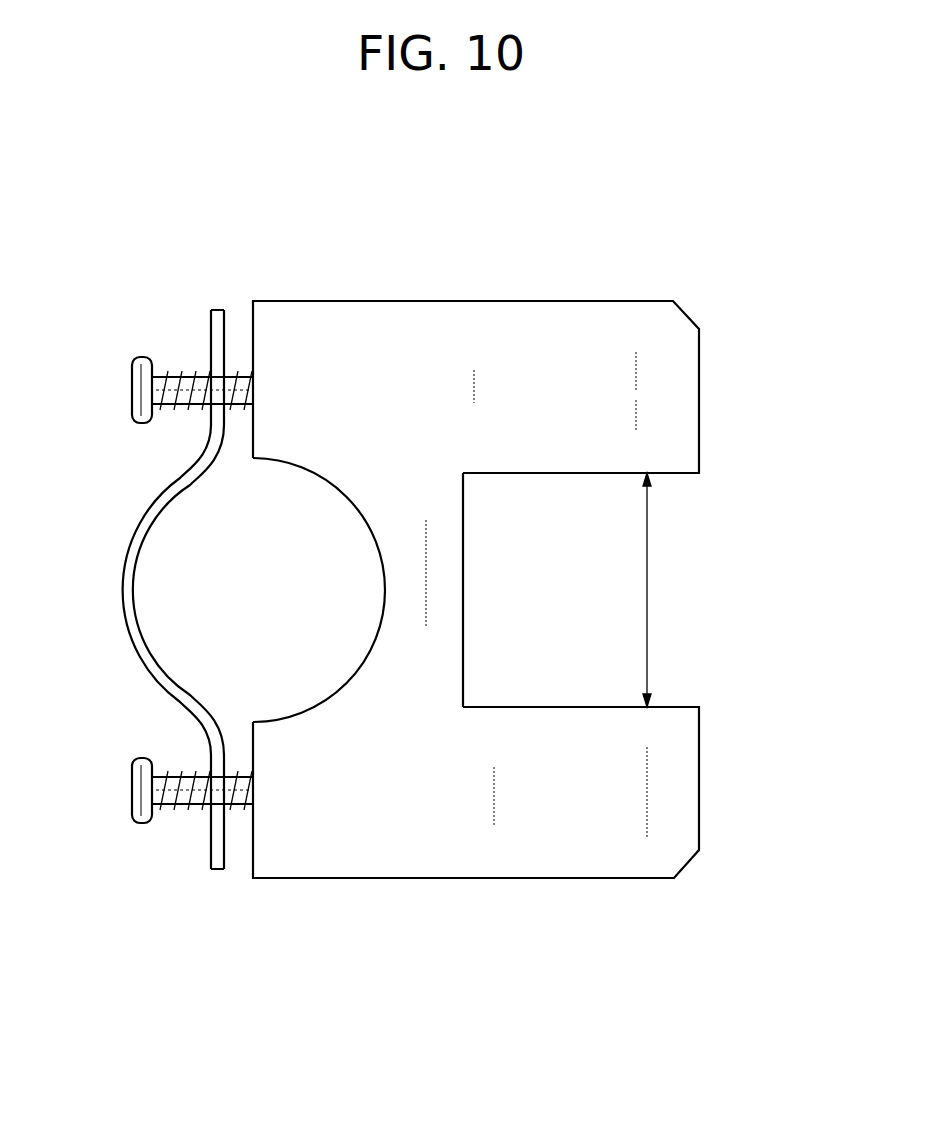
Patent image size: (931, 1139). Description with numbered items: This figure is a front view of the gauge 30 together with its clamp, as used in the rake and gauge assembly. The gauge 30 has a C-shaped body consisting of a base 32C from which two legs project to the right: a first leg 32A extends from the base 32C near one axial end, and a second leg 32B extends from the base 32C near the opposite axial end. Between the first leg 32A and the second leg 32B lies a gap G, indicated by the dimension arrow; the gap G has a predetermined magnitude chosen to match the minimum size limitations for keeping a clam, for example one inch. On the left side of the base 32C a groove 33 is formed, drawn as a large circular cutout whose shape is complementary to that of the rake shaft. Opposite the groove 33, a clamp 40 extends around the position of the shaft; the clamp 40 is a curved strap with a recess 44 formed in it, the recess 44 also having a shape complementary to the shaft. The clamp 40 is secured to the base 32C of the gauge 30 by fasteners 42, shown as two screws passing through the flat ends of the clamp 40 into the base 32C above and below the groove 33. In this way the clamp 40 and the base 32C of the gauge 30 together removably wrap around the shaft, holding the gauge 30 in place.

The gauge 30 is at (540, 585).
The first leg 32A is at (597, 329).
The second leg 32B is at (573, 831).
The base 32C is at (432, 670).
The groove 33 is at (358, 677).
The clamp 40 is at (149, 589).
The fasteners 42 is at (140, 392).
The recess 44 is at (121, 583).
The gap G is at (650, 559).